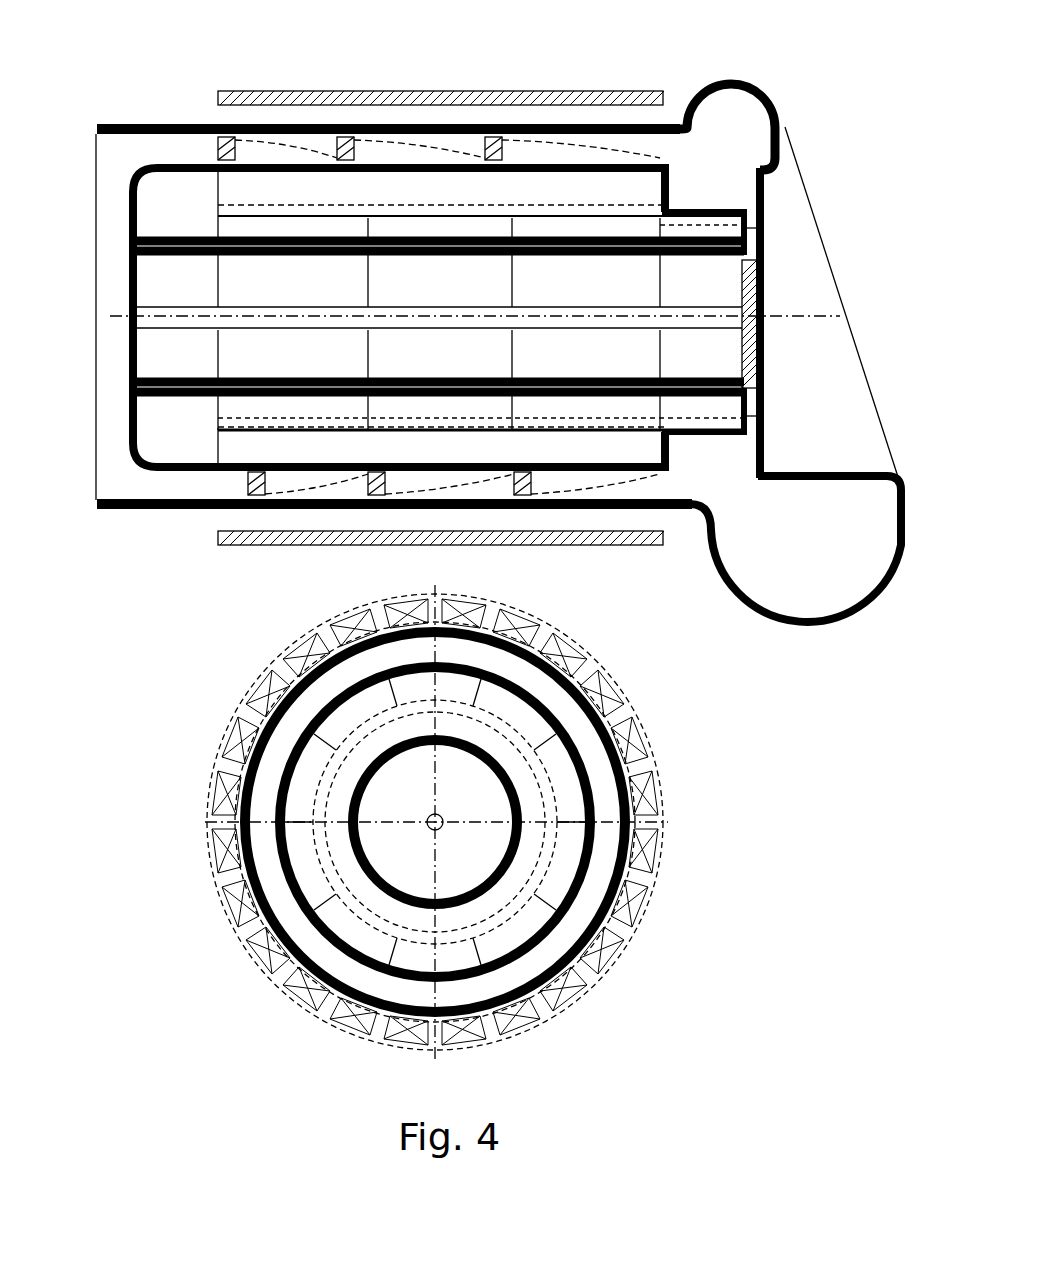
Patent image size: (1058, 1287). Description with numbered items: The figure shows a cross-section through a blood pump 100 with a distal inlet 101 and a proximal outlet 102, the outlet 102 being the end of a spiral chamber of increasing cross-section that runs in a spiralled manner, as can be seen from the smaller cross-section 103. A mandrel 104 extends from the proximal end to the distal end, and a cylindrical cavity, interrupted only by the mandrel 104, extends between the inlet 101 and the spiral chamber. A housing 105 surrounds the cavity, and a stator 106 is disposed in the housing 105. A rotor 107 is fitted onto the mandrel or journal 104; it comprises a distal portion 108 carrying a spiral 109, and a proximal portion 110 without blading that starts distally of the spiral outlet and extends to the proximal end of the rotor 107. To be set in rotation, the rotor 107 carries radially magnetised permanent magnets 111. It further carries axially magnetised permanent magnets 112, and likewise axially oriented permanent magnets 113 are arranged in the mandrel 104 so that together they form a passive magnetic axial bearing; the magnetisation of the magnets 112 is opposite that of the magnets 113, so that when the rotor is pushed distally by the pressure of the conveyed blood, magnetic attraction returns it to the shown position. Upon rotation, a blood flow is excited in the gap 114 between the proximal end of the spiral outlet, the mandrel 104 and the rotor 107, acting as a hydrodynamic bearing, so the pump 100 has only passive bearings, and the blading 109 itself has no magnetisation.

The blood pump 100 is at (108, 97).
The distal inlet 101 is at (93, 438).
The proximal outlet 102 is at (808, 606).
The smaller cross-section 103 is at (738, 115).
The mandrel 104 is at (762, 287).
The housing 105 is at (508, 103).
The stator 106 is at (325, 112).
The rotor 107 is at (127, 196).
The distal portion 108 is at (160, 165).
The spiral 109 is at (220, 152).
The proximal portion 110 is at (700, 207).
The permanent magnets 111 is at (640, 447).
The permanent magnets 112 is at (742, 415).
The permanent magnets 113 is at (131, 342).
The gap 114 is at (752, 227).